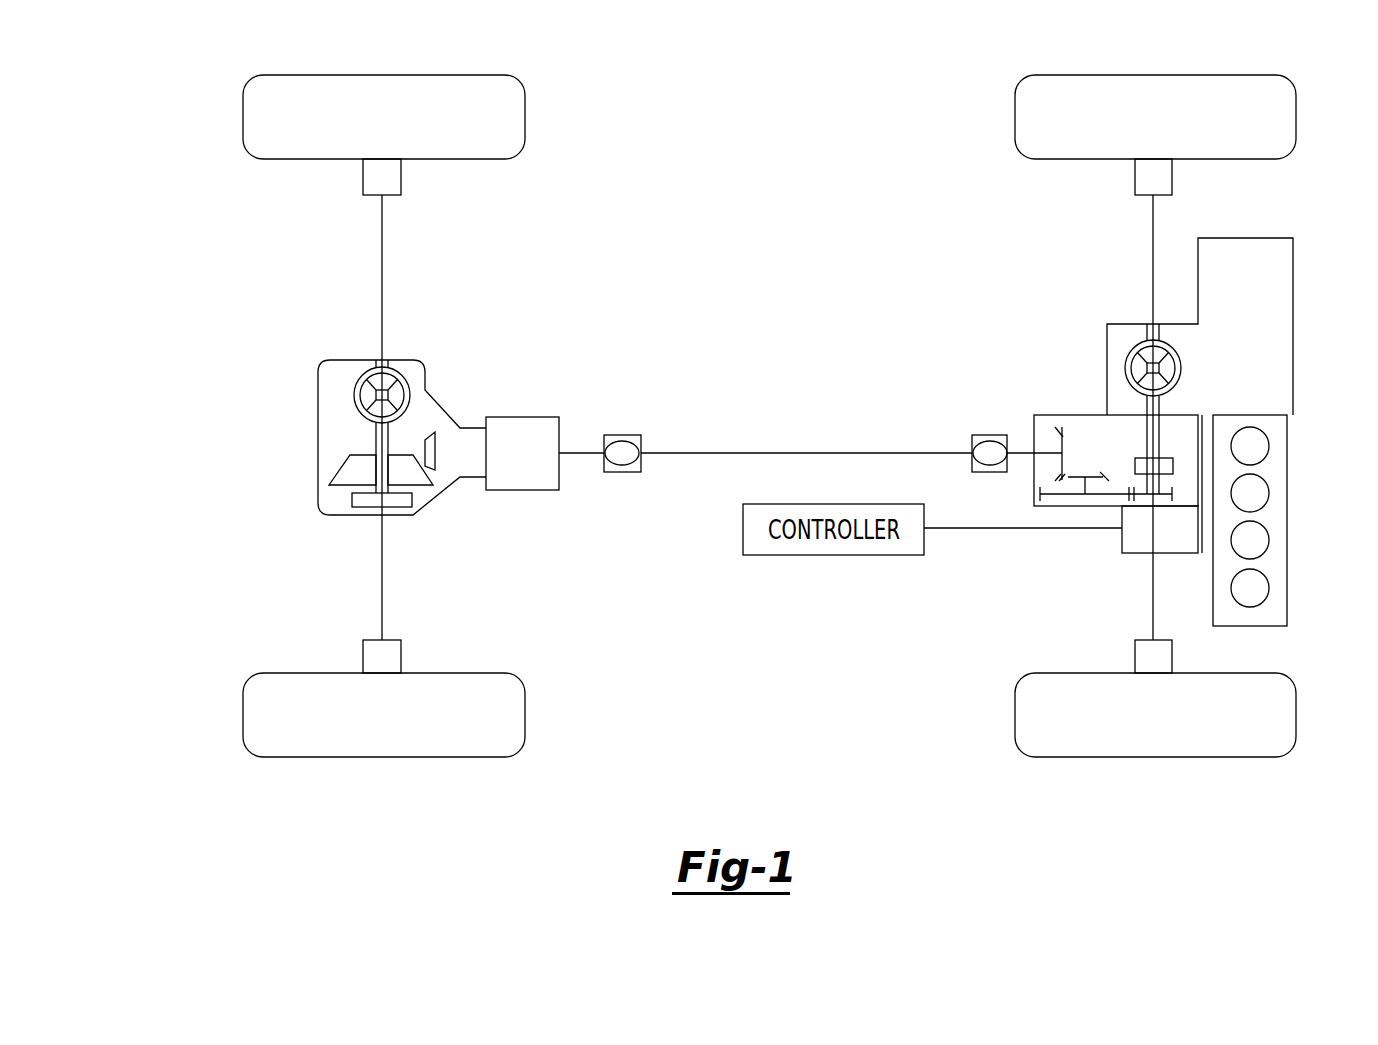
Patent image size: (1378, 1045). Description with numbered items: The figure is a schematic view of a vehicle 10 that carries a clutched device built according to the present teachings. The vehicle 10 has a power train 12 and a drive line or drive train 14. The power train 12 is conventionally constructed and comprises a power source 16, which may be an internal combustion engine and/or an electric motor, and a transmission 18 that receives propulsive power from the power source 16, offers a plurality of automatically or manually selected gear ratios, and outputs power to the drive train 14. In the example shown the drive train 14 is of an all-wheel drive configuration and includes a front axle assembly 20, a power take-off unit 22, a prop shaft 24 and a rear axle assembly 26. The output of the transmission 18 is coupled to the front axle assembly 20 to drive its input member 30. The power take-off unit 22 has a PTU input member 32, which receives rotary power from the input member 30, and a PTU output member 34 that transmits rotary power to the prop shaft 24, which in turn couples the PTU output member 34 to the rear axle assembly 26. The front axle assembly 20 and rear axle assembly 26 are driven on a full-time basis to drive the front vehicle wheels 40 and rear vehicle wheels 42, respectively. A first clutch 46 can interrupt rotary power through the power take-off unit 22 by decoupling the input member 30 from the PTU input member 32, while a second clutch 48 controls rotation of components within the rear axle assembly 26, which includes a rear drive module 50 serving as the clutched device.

The vehicle 10 is at (182, 806).
The power train 12 is at (1239, 439).
The drive train 14 is at (798, 385).
The power source 16 is at (1278, 618).
The transmission 18 is at (1283, 255).
The front axle assembly 20 is at (1153, 372).
The power take-off unit 22 is at (1150, 460).
The prop shaft 24 is at (691, 453).
The rear axle assembly 26 is at (381, 457).
The input member 30 is at (1183, 375).
The PTU input member 32 is at (1142, 493).
The PTU output member 34 is at (1020, 453).
The front vehicle wheels 40 is at (1015, 118).
The rear vehicle wheels 42 is at (243, 117).
The first clutch 46 is at (1173, 466).
The second clutch 48 is at (362, 507).
The rear drive module 50 is at (325, 437).